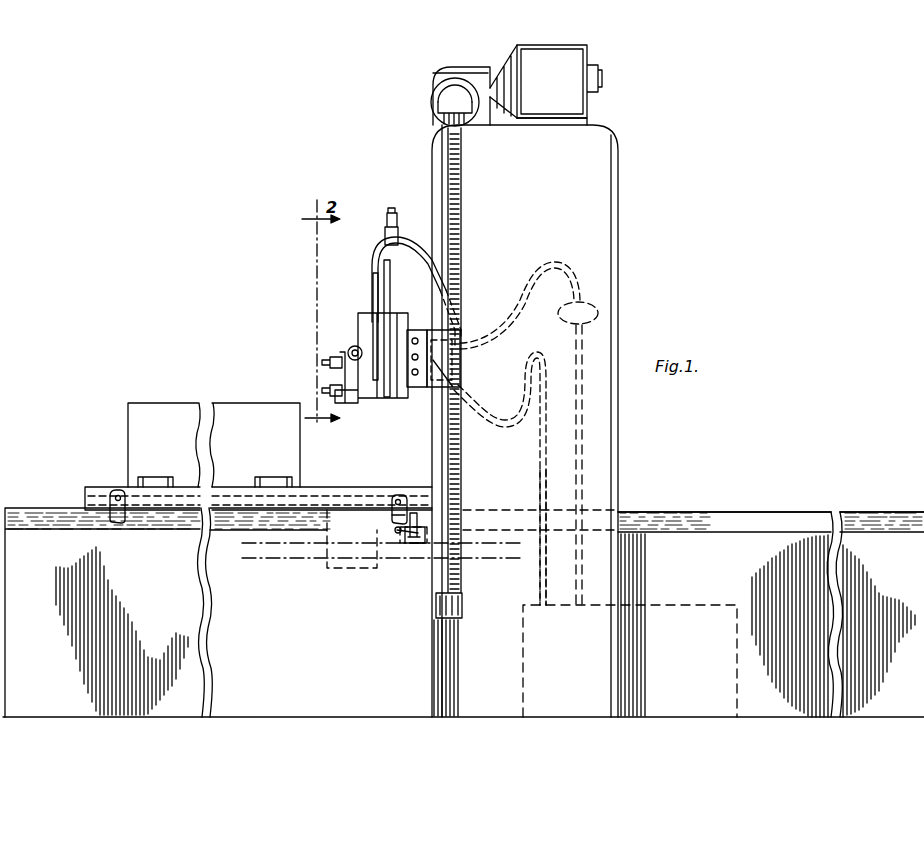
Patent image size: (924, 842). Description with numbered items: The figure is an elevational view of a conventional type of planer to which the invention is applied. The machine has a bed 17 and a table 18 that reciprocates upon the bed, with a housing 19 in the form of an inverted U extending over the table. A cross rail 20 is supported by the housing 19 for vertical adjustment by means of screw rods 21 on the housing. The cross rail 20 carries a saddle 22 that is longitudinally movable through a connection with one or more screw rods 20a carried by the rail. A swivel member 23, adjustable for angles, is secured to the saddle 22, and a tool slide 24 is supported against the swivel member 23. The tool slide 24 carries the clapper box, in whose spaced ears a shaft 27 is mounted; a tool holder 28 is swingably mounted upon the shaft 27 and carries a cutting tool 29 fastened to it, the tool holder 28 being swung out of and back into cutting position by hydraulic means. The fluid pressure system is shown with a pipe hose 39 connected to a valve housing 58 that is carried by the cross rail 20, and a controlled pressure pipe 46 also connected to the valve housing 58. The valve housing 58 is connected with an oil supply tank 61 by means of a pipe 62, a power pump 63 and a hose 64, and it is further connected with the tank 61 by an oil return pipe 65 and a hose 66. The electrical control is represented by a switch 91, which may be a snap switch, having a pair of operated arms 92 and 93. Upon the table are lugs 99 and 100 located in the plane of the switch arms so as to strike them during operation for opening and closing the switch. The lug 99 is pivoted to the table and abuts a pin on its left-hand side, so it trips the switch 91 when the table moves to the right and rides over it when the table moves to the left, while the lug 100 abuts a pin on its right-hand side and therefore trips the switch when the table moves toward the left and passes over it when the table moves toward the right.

The bed 17 is at (713, 542).
The table 18 is at (97, 490).
The housing 19 is at (600, 169).
The cross rail 20 is at (462, 340).
The screw rods 20a is at (408, 390).
The screw rods 21 is at (465, 163).
The saddle 22 is at (398, 380).
The swivel member 23 is at (396, 233).
The tool slide 24 is at (360, 313).
The shaft 27 is at (348, 352).
The tool holder 28 is at (330, 363).
The cutting tool 29 is at (330, 391).
The pipe hose 39 is at (374, 286).
The controlled pressure pipe 46 is at (390, 279).
The valve housing 58 is at (415, 376).
The oil supply tank 61 is at (686, 610).
The pipe 62 is at (583, 441).
The power pump 63 is at (562, 313).
The hose 64 is at (547, 258).
The oil return pipe 65 is at (541, 466).
The hose 66 is at (514, 424).
The switch 91 is at (415, 540).
The operated arm 92 is at (400, 493).
The operated arm 93 is at (397, 533).
The lug 99 is at (391, 520).
The lug 100 is at (118, 523).